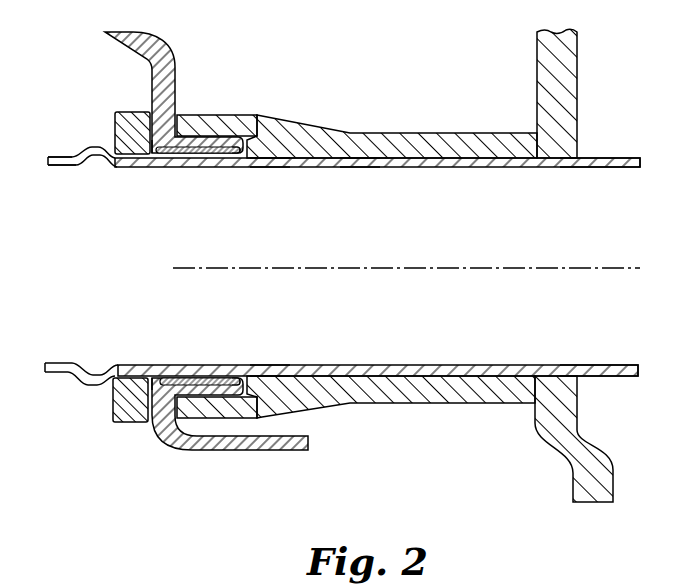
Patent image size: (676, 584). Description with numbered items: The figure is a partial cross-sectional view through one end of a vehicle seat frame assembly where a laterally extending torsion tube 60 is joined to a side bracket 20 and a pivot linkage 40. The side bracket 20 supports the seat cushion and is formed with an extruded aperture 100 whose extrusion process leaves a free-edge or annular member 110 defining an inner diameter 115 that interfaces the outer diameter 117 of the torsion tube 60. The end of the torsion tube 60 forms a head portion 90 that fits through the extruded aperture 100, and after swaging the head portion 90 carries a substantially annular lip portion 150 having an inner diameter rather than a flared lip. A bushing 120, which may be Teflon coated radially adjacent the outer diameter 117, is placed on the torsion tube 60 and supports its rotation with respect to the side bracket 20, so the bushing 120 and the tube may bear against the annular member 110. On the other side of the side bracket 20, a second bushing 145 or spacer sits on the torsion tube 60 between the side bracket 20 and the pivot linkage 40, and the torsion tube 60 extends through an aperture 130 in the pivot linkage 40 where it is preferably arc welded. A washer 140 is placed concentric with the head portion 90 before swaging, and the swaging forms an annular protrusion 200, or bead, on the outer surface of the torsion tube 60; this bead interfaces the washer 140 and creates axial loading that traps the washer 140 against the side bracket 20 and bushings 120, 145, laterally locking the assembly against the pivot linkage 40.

The side bracket 20 is at (176, 63).
The pivot linkage 40 is at (578, 88).
The torsion tube 60 is at (458, 168).
The head portion 90 is at (63, 157).
The extruded aperture 100 is at (152, 156).
The annular member 110 is at (193, 153).
The inner diameter 115 is at (218, 158).
The outer diameter 117 is at (263, 160).
The bushing 120 is at (253, 137).
The aperture 130 is at (560, 168).
The washer 140 is at (133, 112).
The bushing 145 is at (447, 133).
The lip portion 150 is at (358, 168).
The annular protrusion 200 is at (97, 146).